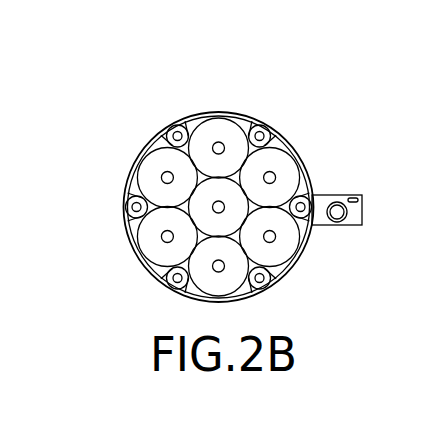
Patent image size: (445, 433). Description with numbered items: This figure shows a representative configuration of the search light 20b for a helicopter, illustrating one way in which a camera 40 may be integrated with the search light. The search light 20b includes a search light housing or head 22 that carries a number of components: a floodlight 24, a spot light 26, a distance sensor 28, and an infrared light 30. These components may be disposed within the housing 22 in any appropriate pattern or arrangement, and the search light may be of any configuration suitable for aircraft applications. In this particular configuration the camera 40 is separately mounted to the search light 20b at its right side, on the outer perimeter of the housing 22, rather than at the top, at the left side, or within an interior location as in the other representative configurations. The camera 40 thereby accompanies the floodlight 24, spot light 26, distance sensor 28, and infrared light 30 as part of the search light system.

The search light 20b is at (166, 92).
The search light housing 22 is at (310, 174).
The floodlight 24 is at (260, 125).
The spot light 26 is at (272, 172).
The distance sensor 28 is at (250, 205).
The infrared light 30 is at (212, 268).
The camera 40 is at (363, 206).